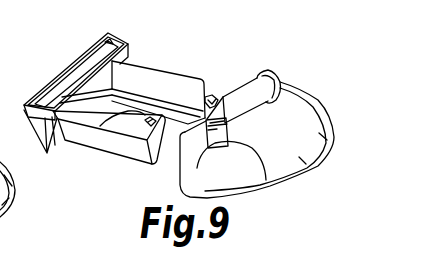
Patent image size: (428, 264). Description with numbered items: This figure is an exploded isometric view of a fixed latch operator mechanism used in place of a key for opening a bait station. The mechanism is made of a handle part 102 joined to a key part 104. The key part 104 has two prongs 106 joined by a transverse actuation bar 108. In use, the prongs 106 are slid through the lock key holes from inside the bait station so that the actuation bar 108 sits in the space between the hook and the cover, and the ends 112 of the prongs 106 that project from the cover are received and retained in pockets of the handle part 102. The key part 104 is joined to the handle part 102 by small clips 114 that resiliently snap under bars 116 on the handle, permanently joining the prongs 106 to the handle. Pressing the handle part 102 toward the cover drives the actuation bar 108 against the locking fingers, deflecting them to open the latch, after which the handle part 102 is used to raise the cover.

The handle part 102 is at (292, 141).
The key part 104 is at (143, 63).
The prongs 106 is at (185, 76).
The transverse actuation bar 108 is at (60, 73).
The ends of the key part prongs 112 is at (210, 96).
The small clips 114 is at (100, 126).
The bars 116 is at (218, 130).